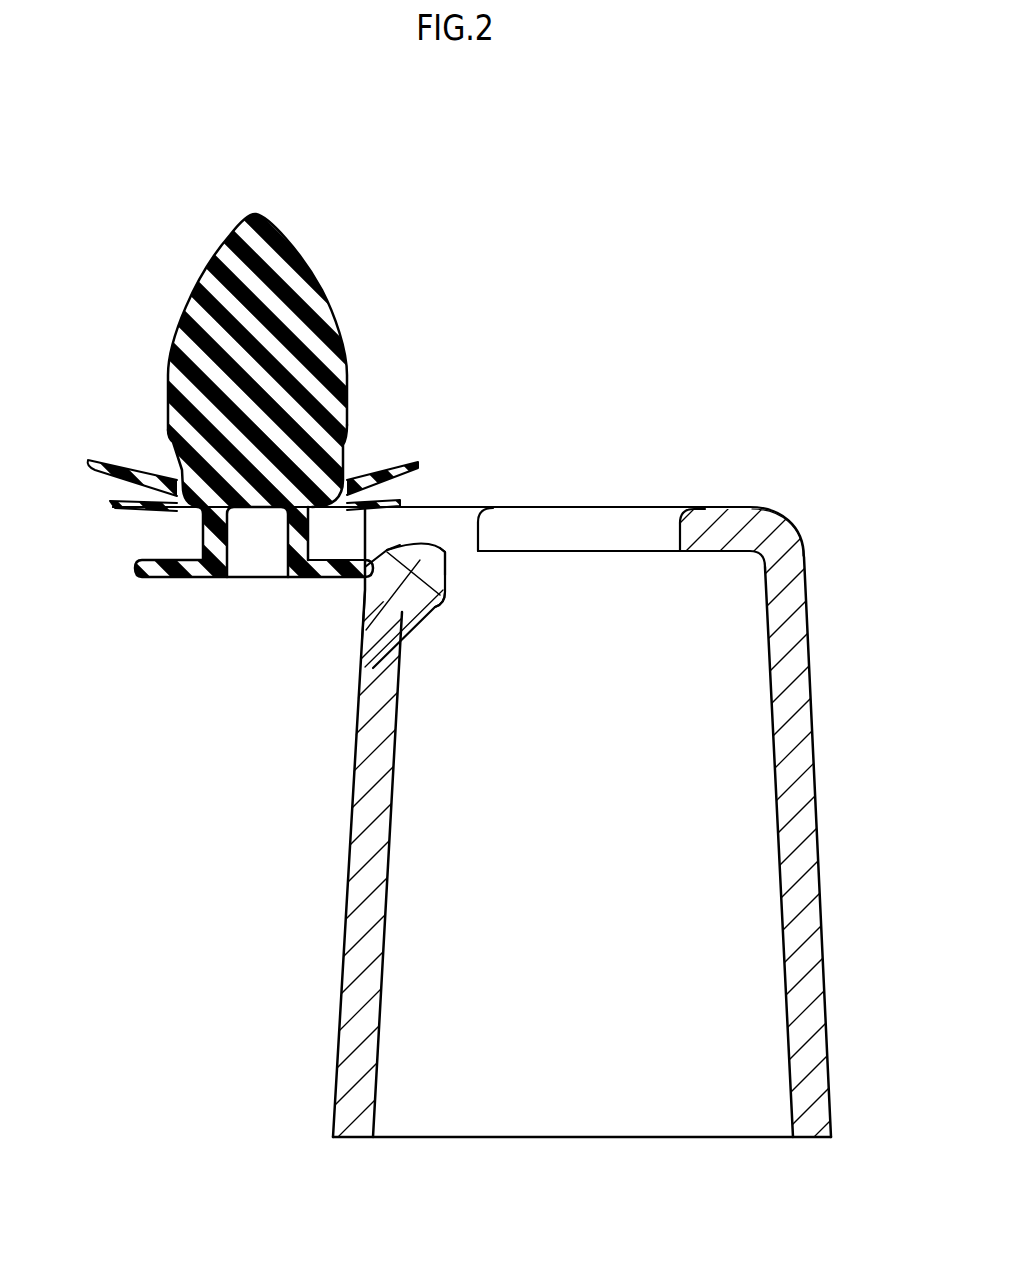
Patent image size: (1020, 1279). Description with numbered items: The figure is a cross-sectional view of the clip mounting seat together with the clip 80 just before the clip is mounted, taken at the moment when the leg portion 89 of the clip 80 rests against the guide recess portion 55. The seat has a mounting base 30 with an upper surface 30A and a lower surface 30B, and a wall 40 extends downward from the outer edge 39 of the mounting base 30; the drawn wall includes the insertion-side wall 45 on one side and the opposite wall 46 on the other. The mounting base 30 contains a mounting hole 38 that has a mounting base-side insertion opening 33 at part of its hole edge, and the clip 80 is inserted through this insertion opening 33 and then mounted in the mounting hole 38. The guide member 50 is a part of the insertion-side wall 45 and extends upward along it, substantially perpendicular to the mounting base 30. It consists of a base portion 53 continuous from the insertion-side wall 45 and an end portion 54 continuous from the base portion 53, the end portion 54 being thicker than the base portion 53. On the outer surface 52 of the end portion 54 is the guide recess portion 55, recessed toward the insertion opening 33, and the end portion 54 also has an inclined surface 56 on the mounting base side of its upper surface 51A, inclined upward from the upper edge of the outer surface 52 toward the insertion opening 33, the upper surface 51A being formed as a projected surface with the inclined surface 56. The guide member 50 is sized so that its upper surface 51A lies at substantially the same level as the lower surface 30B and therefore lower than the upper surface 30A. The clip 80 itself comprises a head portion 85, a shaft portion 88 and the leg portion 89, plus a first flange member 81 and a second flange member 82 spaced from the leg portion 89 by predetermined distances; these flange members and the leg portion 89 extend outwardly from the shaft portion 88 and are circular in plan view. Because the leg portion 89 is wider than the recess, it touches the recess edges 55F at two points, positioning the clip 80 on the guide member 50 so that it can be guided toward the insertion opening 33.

The mounting base 30 is at (735, 507).
The upper surface of the mounting base 30A is at (715, 507).
The lower surface of the mounting base 30B is at (717, 552).
The mounting base-side insertion opening 33 is at (476, 538).
The mounting hole 38 is at (678, 538).
The outer edge 39 is at (790, 522).
The wall 40 is at (820, 690).
The insertion-side wall 45 is at (350, 825).
The second side wall 46 is at (810, 825).
The guide member 50 is at (427, 607).
The upper surface 51A is at (443, 553).
The outer surface 52 is at (360, 640).
The base portion 53 is at (357, 690).
The end portion 54 is at (437, 580).
The guide recess portion 55 is at (380, 573).
The recess edge 55F is at (360, 582).
The inclined surface 56 is at (397, 538).
The clip 80 is at (326, 296).
The first flange member 81 is at (96, 460).
The second flange member 82 is at (110, 504).
The head portion 85 is at (212, 288).
The shaft portion 88 is at (203, 530).
The leg portion 89 is at (140, 568).